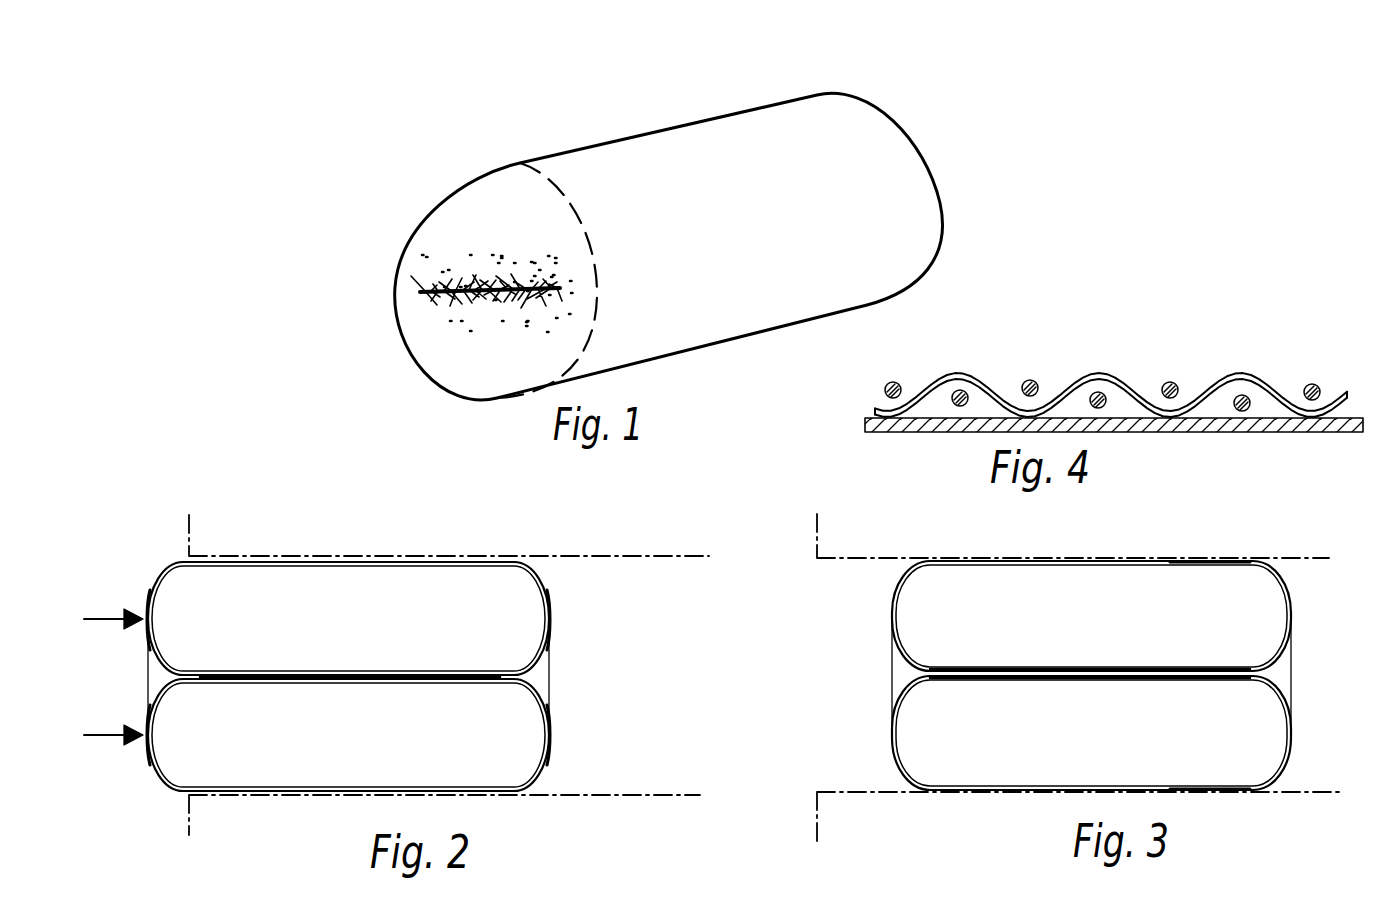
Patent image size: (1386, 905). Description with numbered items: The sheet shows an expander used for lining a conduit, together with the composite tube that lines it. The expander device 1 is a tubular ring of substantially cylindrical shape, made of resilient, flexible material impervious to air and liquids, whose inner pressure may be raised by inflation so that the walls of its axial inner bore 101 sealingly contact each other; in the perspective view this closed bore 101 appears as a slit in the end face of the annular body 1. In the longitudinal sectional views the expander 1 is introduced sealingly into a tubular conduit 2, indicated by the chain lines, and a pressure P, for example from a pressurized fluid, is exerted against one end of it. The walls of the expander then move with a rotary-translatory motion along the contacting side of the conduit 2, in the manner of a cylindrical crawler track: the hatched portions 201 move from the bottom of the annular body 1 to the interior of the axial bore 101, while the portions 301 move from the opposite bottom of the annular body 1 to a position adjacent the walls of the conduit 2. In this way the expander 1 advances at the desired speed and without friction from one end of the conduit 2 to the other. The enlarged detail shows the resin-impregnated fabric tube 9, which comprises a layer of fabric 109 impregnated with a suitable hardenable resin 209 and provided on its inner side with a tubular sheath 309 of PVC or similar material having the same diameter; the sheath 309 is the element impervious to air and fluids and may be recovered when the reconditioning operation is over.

In FIG. 1, the expander device 1 is at (606, 144).
In FIG. 2, the expander device 1 is at (327, 563).
In FIG. 3, the expander device 1 is at (1078, 565).
In FIG. 1, the axial inner bore 101 is at (463, 293).
In FIG. 2, the axial inner bore 101 is at (405, 677).
In FIG. 2, the tubular conduit 2 is at (575, 556).
In FIG. 3, the tubular conduit 2 is at (841, 560).
In FIG. 2, the hatched portions 201 is at (156, 619).
In FIG. 3, the hatched portions 201 is at (995, 669).
In FIG. 2, the portions 301 is at (551, 622).
In FIG. 3, the portions 301 is at (1240, 560).
In FIG. 4, the resin-impregnated fabric tube 9 is at (1217, 377).
In FIG. 4, the layer of fabric 109 is at (965, 374).
In FIG. 4, the hardenable resin 209 is at (1080, 398).
In FIG. 4, the tubular sheath 309 is at (1310, 431).
In FIG. 2, the pressure P is at (109, 677).